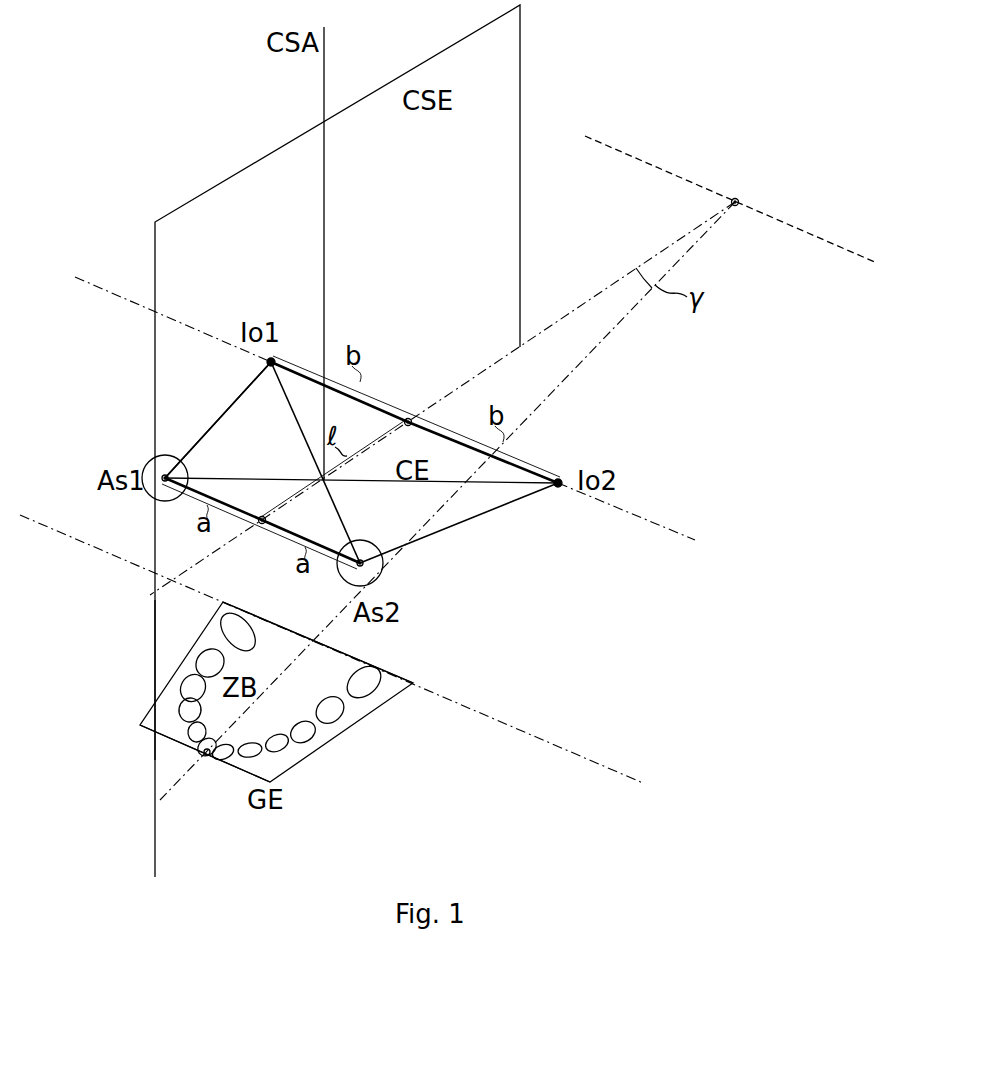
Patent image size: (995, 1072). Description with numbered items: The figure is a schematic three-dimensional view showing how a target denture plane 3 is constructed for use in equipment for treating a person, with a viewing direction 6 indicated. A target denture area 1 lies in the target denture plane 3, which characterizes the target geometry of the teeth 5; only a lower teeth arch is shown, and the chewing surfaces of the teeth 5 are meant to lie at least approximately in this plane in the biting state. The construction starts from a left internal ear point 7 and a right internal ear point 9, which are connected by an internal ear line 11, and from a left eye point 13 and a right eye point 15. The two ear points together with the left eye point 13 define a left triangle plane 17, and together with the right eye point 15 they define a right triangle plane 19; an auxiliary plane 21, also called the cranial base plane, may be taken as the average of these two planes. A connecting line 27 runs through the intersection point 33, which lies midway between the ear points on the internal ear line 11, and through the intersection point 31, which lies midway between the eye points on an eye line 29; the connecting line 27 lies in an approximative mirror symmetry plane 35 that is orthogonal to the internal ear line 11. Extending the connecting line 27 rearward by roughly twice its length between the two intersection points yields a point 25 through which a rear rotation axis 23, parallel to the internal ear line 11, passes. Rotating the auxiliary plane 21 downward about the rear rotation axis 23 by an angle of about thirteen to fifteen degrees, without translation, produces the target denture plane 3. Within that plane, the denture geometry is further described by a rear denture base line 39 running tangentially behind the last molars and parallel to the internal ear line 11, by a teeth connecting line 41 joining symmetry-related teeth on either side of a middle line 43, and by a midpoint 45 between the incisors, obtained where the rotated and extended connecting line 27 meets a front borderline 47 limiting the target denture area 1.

The target denture area 1 is at (287, 760).
The target denture plane 3 is at (382, 745).
The teeth 5 is at (373, 670).
The viewing direction 6 is at (150, 680).
The left internal ear point 7 is at (561, 481).
The right internal ear point 9 is at (273, 355).
The internal ear line 11 is at (307, 383).
The left eye point 13 is at (368, 567).
The right eye point 15 is at (155, 485).
The left triangle plane 17 is at (468, 511).
The right triangle plane 19 is at (251, 422).
The auxiliary plane 21 is at (188, 423).
The rear rotation axis 23 is at (665, 172).
The point 25 is at (737, 200).
The connecting line 27 is at (278, 511).
The eye line 29 is at (326, 537).
The intersection point 31 is at (262, 524).
The intersection point 33 is at (409, 418).
The approximative mirror symmetry plane 35 is at (507, 42).
The rear denture base line 39 is at (510, 725).
The teeth connecting line 41 is at (317, 667).
The middle line 43 is at (170, 787).
The midpoint 45 is at (207, 752).
The front borderline 47 is at (250, 777).